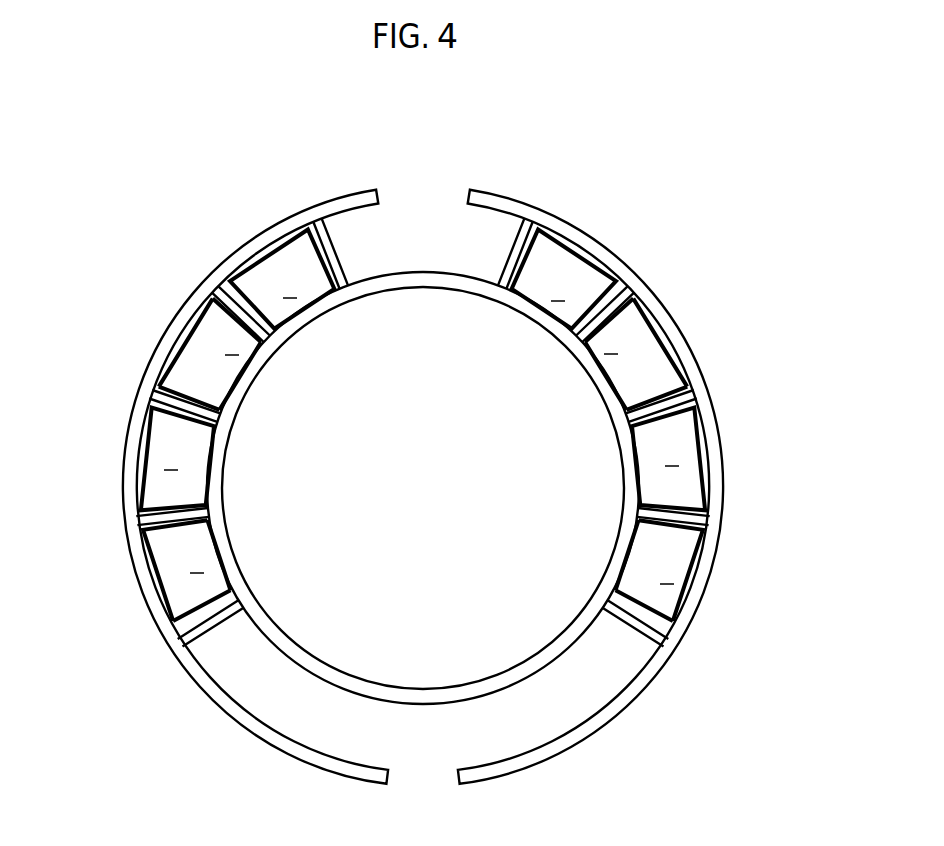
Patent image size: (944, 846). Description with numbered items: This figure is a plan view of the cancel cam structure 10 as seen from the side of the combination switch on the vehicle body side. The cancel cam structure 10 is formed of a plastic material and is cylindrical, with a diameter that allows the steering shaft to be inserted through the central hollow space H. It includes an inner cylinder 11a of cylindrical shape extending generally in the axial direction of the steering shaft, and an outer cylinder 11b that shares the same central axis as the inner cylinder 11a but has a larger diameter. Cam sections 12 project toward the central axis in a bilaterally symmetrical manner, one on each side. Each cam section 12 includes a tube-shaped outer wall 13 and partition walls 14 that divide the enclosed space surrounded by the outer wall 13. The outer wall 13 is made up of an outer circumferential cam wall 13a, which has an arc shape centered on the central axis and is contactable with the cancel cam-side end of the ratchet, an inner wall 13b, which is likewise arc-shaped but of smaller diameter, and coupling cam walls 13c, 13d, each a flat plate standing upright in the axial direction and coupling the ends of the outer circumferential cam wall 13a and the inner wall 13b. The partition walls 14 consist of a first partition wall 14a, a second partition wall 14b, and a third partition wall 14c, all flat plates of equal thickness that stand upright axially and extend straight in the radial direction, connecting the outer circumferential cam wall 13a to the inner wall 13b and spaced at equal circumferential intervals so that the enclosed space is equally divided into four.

The cancel cam structure 10 is at (621, 193).
The inner cylinder 11a is at (518, 668).
The outer cylinder 11b is at (578, 744).
The cam section 12 is at (165, 282).
The outer wall 13 is at (70, 275).
The outer circumferential cam wall 13a is at (210, 335).
The inner wall 13b is at (237, 372).
The coupling cam wall 13c is at (162, 387).
The coupling cam wall 13d is at (178, 613).
The partition walls 14 is at (318, 385).
The first partition wall 14a is at (145, 385).
The second partition wall 14b is at (192, 393).
The third partition wall 14c is at (206, 485).
The hollow space H is at (425, 532).